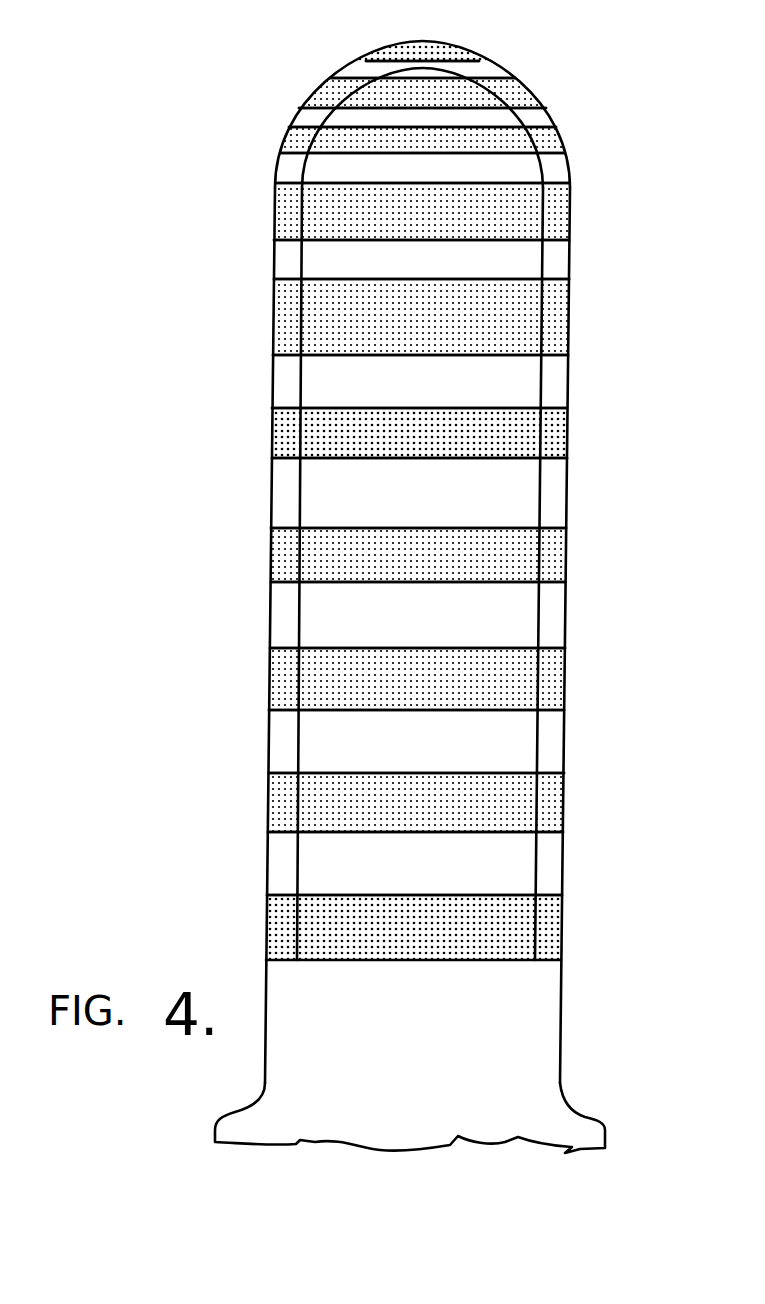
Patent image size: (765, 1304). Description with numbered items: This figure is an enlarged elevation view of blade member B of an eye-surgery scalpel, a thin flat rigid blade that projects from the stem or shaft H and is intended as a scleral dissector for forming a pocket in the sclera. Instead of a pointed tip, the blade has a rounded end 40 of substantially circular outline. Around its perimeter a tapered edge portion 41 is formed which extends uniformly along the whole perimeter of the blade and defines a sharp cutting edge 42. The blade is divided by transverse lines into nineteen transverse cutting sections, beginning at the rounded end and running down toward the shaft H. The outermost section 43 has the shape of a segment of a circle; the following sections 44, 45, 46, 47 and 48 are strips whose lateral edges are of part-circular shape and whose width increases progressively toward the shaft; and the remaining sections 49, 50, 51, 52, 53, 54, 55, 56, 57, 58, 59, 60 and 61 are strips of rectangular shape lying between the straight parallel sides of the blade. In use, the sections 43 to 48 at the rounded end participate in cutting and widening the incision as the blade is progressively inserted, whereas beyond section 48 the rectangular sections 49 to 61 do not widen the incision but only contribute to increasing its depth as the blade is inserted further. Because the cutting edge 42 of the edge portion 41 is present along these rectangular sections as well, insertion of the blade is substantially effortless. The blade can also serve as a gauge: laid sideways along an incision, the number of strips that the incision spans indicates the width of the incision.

The rounded end 40 is at (474, 39).
The tapered edge portion 41 is at (280, 377).
The cutting edge 42 is at (269, 616).
The transverse cutting section 43 is at (412, 45).
The transverse cutting section 44 is at (495, 72).
The transverse cutting section 45 is at (330, 88).
The transverse cutting section 46 is at (497, 118).
The transverse cutting section 47 is at (325, 135).
The transverse cutting section 48 is at (510, 170).
The transverse cutting section 49 is at (325, 207).
The transverse cutting section 50 is at (520, 262).
The transverse cutting section 51 is at (325, 298).
The transverse cutting section 52 is at (527, 384).
The transverse cutting section 53 is at (340, 428).
The transverse cutting section 54 is at (517, 498).
The transverse cutting section 55 is at (320, 545).
The transverse cutting section 56 is at (520, 613).
The transverse cutting section 57 is at (312, 665).
The transverse cutting section 58 is at (503, 735).
The transverse cutting section 59 is at (340, 790).
The transverse cutting section 60 is at (478, 870).
The transverse cutting section 61 is at (325, 917).
The stem or shaft H is at (524, 1033).